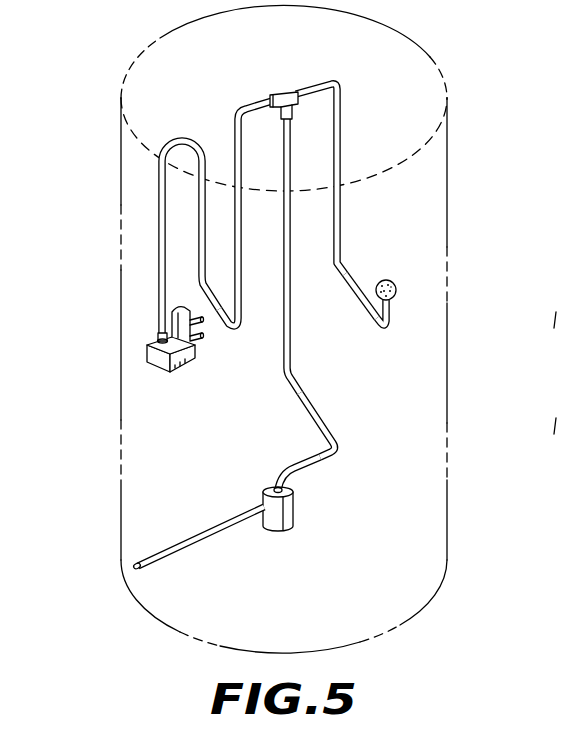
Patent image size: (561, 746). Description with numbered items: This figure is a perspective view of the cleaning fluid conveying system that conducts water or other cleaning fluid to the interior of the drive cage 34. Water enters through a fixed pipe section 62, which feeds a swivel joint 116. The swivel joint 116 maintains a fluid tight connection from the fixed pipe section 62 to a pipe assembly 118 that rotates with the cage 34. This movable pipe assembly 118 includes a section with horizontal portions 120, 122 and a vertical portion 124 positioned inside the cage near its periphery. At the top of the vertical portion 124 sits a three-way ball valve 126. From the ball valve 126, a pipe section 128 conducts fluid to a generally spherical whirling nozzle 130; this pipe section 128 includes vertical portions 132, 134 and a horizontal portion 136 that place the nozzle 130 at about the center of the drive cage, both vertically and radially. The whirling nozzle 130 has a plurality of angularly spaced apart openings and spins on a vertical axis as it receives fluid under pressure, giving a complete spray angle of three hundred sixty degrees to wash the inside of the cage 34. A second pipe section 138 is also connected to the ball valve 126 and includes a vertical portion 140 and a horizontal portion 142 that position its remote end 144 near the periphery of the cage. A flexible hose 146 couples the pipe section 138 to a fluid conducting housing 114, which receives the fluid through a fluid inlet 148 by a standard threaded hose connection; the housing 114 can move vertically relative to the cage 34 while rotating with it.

The drive cage 34 is at (417, 68).
The fixed pipe section 62 is at (227, 527).
The fluid conducting housing 114 is at (178, 363).
The swivel joint 116 is at (297, 520).
The pipe assembly 118 is at (282, 365).
The horizontal portion 120 is at (313, 470).
The horizontal portion 122 is at (317, 410).
The vertical portion 124 is at (293, 335).
The three-way ball valve 126 is at (282, 93).
The pipe section 128 is at (342, 127).
The whirling nozzle 130 is at (393, 283).
The vertical portion 132 is at (343, 223).
The vertical portion 134 is at (388, 315).
The horizontal portion 136 is at (353, 298).
The pipe section 138 is at (250, 107).
The vertical portion 140 is at (243, 143).
The horizontal portion 142 is at (218, 322).
The remote end 144 is at (197, 248).
The flexible hose 146 is at (162, 187).
The fluid inlet 148 is at (157, 340).